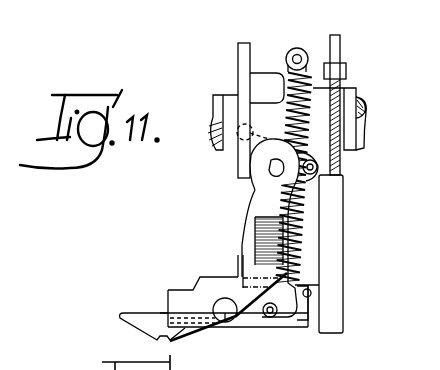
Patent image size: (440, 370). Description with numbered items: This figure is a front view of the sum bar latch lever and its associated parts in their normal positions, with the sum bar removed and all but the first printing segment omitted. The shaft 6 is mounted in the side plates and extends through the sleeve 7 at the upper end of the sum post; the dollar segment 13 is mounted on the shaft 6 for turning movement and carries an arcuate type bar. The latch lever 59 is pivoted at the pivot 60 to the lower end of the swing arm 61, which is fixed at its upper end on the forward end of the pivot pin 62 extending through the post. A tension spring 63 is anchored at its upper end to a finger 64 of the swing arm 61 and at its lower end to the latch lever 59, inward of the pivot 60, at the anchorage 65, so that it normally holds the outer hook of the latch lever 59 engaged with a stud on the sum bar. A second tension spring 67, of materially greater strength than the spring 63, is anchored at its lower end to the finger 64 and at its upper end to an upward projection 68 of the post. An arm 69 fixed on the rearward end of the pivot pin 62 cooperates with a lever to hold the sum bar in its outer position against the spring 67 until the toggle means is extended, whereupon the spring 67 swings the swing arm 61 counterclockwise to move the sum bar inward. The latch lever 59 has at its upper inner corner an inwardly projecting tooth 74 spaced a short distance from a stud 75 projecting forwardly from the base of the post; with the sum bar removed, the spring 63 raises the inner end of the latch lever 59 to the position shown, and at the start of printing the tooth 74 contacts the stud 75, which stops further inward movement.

The shaft 6 is at (364, 112).
The sleeve 7 is at (346, 88).
The dollar segment 13 is at (334, 197).
The latch lever 59 is at (125, 314).
The pivot 60 is at (224, 322).
The swing arm 61 is at (234, 240).
The pivot pin 62 is at (272, 168).
The tension spring 63 is at (302, 231).
The finger 64 is at (318, 169).
The spring anchorage 65 is at (270, 318).
The second tension spring 67 is at (293, 128).
The upward projection 68 is at (295, 51).
The arm 69 is at (238, 148).
The tooth 74 is at (297, 291).
The stud 75 is at (312, 293).